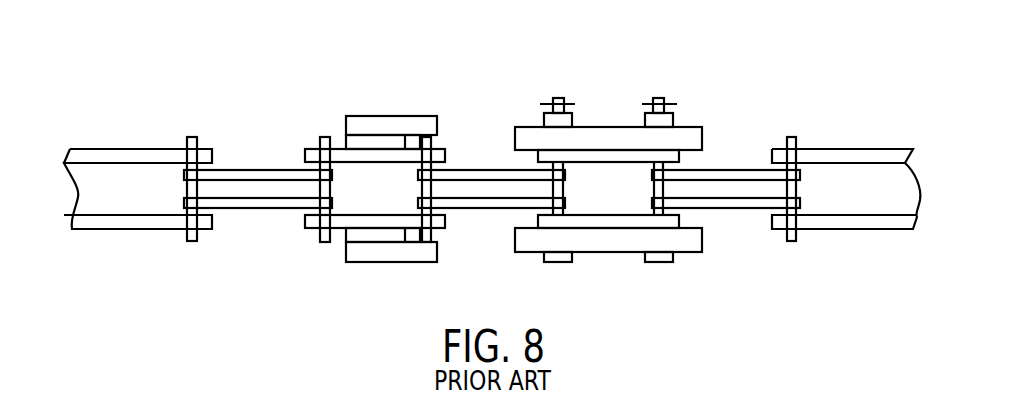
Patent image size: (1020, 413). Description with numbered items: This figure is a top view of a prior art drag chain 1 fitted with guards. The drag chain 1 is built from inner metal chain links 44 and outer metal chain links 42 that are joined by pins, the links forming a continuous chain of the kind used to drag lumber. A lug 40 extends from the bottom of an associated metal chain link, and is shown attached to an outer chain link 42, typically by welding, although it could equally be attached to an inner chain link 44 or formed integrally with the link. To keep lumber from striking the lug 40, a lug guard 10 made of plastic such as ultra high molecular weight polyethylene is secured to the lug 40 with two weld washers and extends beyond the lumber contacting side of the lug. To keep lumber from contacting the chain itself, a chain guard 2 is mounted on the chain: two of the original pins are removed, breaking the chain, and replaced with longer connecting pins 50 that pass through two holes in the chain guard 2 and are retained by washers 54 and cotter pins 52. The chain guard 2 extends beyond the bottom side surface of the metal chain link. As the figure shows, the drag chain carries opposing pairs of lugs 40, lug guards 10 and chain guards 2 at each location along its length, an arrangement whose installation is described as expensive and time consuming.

The drag chain 1 is at (262, 96).
The chain guard 2 is at (610, 125).
The lug guard 10 is at (392, 115).
The lug 40 is at (375, 142).
The outer metal chain link 42 is at (400, 163).
The inner metal chain link 44 is at (733, 170).
The longer connecting pin 50 is at (662, 100).
The cotter pin 52 is at (670, 103).
The washer 54 is at (675, 118).